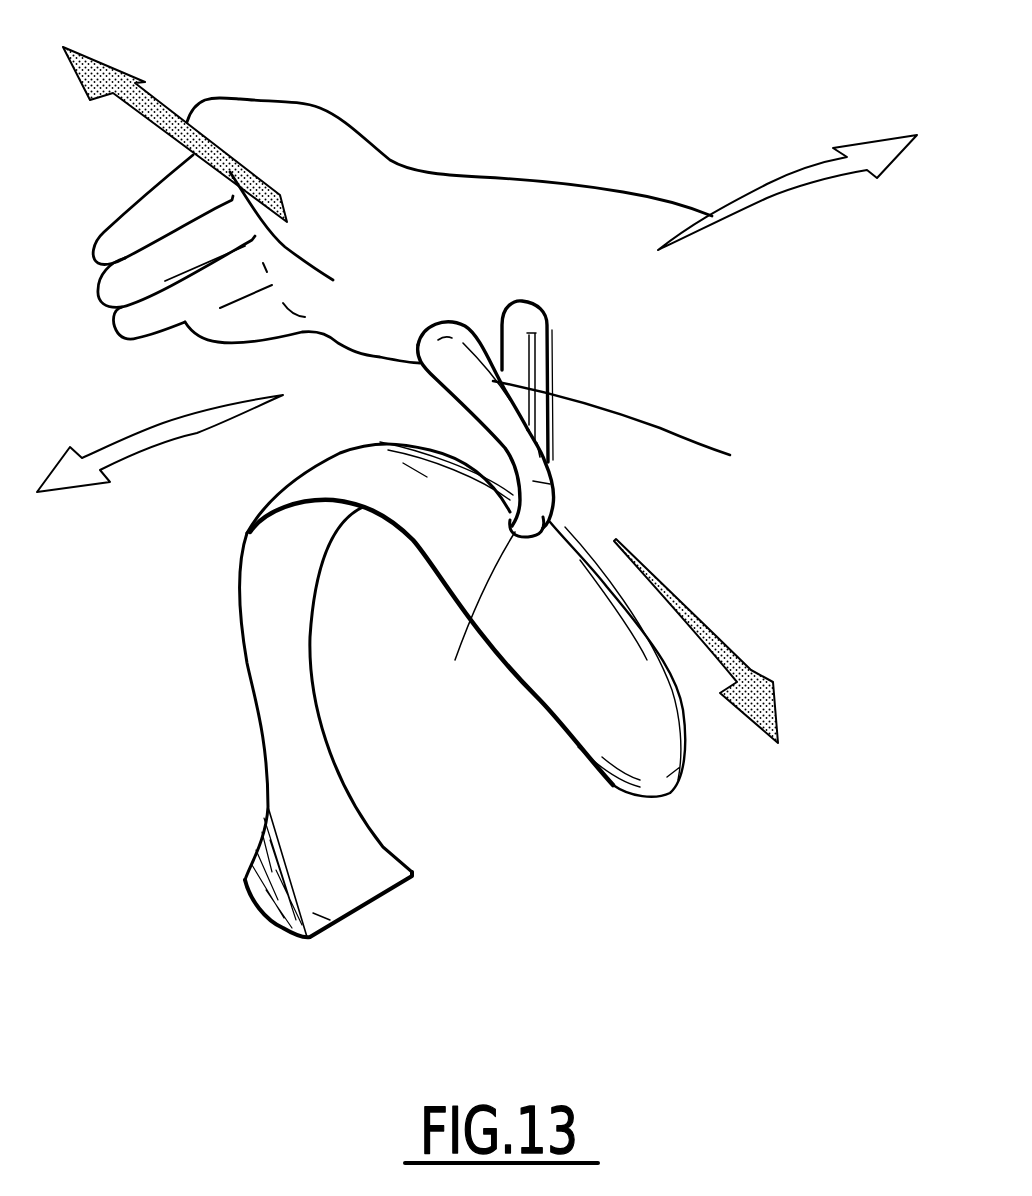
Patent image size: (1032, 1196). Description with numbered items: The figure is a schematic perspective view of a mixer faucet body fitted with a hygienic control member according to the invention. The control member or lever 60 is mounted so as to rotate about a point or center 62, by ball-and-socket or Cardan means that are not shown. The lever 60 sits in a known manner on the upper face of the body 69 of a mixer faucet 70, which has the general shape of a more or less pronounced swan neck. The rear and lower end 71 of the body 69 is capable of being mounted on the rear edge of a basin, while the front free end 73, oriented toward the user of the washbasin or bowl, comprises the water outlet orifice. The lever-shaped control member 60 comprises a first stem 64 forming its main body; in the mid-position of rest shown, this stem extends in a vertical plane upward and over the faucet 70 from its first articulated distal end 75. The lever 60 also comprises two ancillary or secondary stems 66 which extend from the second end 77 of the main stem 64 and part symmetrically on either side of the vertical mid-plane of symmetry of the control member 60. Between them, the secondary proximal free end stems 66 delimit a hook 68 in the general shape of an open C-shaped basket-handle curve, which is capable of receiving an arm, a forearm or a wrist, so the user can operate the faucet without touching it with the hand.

The control member 60 is at (562, 383).
The point or center 62 is at (475, 620).
The first stem 64 is at (584, 567).
The secondary stems 66 is at (493, 382).
The hook 68 is at (552, 286).
The body 69 is at (470, 663).
The mixer faucet 70 is at (230, 695).
The rear and lower end 71 is at (347, 890).
The front free end 73 is at (643, 768).
The first articulated distal end 75 is at (547, 522).
The second end 77 is at (543, 416).